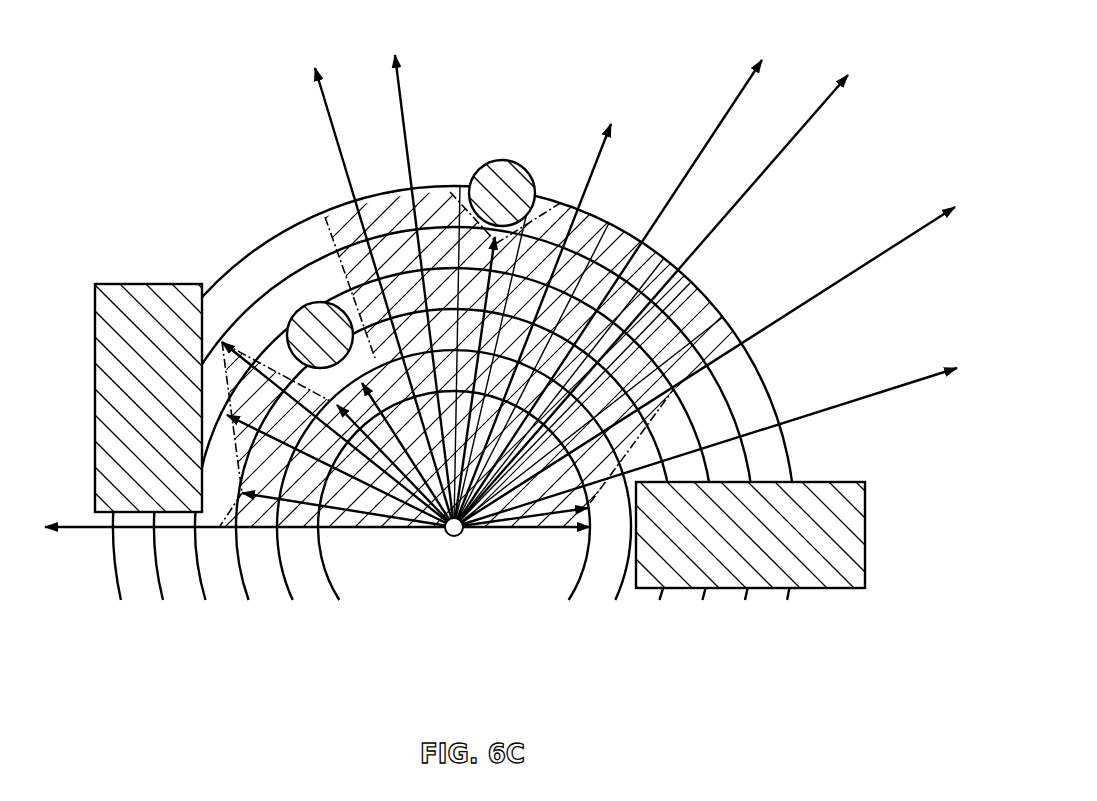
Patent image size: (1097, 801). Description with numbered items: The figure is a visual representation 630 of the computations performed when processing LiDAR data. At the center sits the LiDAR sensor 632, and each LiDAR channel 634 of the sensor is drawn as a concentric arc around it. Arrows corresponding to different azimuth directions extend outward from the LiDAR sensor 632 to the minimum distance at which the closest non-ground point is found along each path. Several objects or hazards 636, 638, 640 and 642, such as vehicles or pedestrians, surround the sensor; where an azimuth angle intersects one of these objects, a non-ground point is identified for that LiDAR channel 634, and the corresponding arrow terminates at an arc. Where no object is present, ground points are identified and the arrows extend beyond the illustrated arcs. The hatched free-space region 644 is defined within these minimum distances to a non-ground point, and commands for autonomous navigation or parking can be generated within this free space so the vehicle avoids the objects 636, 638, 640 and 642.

The visual representation 630 is at (614, 113).
The LiDAR sensor 632 is at (452, 537).
The LiDAR channel 634 is at (770, 400).
The object or hazard 636 is at (95, 310).
The object or hazard 638 is at (865, 558).
The object or hazard 640 is at (318, 302).
The object or hazard 642 is at (502, 160).
The free-space region 644 is at (707, 297).